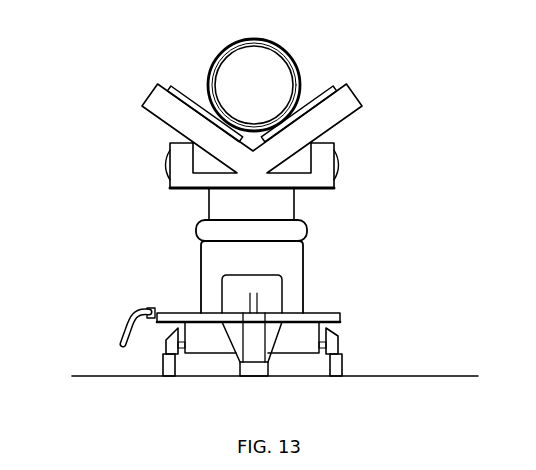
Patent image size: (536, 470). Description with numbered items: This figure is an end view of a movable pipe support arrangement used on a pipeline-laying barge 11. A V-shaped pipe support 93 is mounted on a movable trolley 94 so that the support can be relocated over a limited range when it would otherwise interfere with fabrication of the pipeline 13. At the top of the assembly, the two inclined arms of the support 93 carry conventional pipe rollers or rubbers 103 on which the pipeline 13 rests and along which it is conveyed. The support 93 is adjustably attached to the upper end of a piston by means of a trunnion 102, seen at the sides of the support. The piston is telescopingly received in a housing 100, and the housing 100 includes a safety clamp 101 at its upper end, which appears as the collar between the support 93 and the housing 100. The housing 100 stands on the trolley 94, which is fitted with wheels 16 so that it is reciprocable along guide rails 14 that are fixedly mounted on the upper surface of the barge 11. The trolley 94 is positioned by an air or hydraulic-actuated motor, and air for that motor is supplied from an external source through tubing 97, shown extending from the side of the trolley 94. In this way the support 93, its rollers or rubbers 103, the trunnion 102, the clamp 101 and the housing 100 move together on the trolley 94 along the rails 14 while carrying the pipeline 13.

The pipeline-laying barge 11 is at (110, 399).
The pipeline 13 is at (287, 50).
The rails 14 is at (343, 366).
The wheels 16 is at (339, 339).
The V-shaped pipe support 93 is at (351, 88).
The trolley 94 is at (340, 315).
The tubing 97 is at (128, 328).
The housing 100 is at (277, 269).
The safety clamp 101 is at (306, 229).
The trunnion 102 is at (166, 163).
The pipe rollers or rubbers 103 is at (182, 85).